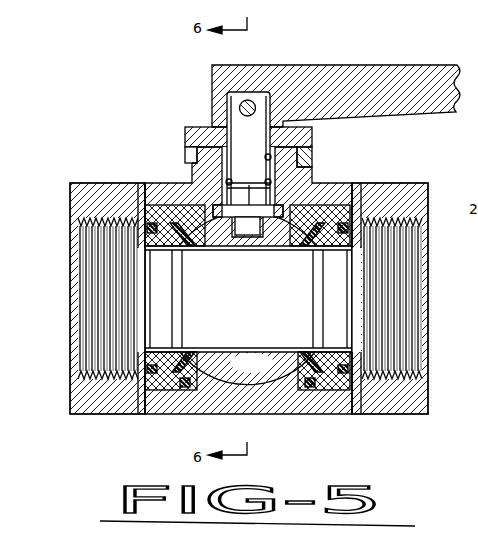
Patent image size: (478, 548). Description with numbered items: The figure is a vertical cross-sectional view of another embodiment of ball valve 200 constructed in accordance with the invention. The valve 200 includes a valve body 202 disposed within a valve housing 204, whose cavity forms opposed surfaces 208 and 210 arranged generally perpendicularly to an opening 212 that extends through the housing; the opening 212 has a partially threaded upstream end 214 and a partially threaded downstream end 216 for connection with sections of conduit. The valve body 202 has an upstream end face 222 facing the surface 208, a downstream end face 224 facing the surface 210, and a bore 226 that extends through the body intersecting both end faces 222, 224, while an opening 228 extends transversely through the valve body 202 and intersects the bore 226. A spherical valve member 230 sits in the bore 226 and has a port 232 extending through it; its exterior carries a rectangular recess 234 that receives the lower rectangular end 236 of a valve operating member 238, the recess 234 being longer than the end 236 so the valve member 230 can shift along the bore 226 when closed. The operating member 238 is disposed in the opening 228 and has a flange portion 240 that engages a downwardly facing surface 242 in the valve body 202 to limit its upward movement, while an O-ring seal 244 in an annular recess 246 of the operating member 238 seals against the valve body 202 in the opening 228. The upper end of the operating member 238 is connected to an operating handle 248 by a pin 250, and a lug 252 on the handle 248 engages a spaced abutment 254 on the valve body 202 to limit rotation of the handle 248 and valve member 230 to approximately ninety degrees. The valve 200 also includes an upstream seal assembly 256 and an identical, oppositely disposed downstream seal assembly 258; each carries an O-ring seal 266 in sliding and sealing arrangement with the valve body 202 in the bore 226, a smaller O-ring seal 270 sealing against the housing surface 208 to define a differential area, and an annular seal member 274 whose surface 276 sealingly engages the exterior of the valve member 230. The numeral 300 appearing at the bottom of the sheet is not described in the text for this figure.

The valve 200 is at (336, 44).
The valve body 202 is at (252, 415).
The valve housing 204 is at (107, 413).
The surface 208 is at (157, 182).
The surface 210 is at (348, 183).
The opening 212 is at (87, 307).
The upstream end 214 is at (86, 262).
The downstream end 216 is at (408, 303).
The upstream end face 222 is at (131, 413).
The downstream end face 224 is at (352, 413).
The bore 226 is at (291, 387).
The opening 228 is at (303, 153).
The valve member 230 is at (267, 372).
The port 232 is at (347, 300).
The rectangular recess 234 is at (245, 240).
The lower rectangular end 236 is at (239, 242).
The valve operating member 238 is at (262, 121).
The flange portion 240 is at (268, 163).
The downwardly facing surface 242 is at (220, 205).
The O-ring seal 244 is at (300, 174).
The annular recess 246 is at (218, 131).
The operating handle 248 is at (361, 80).
The pin 250 is at (251, 102).
The lug 252 is at (185, 152).
The abutment 254 is at (189, 164).
The upstream seal assembly 256 is at (162, 340).
The downstream seal assembly 258 is at (341, 343).
The O-ring seal 266 is at (181, 388).
The O-ring seal 270 is at (134, 386).
The annular seal member 274 is at (178, 298).
The surface 276 is at (203, 345).
The valve assembly (next figure) 300 is at (424, 538).